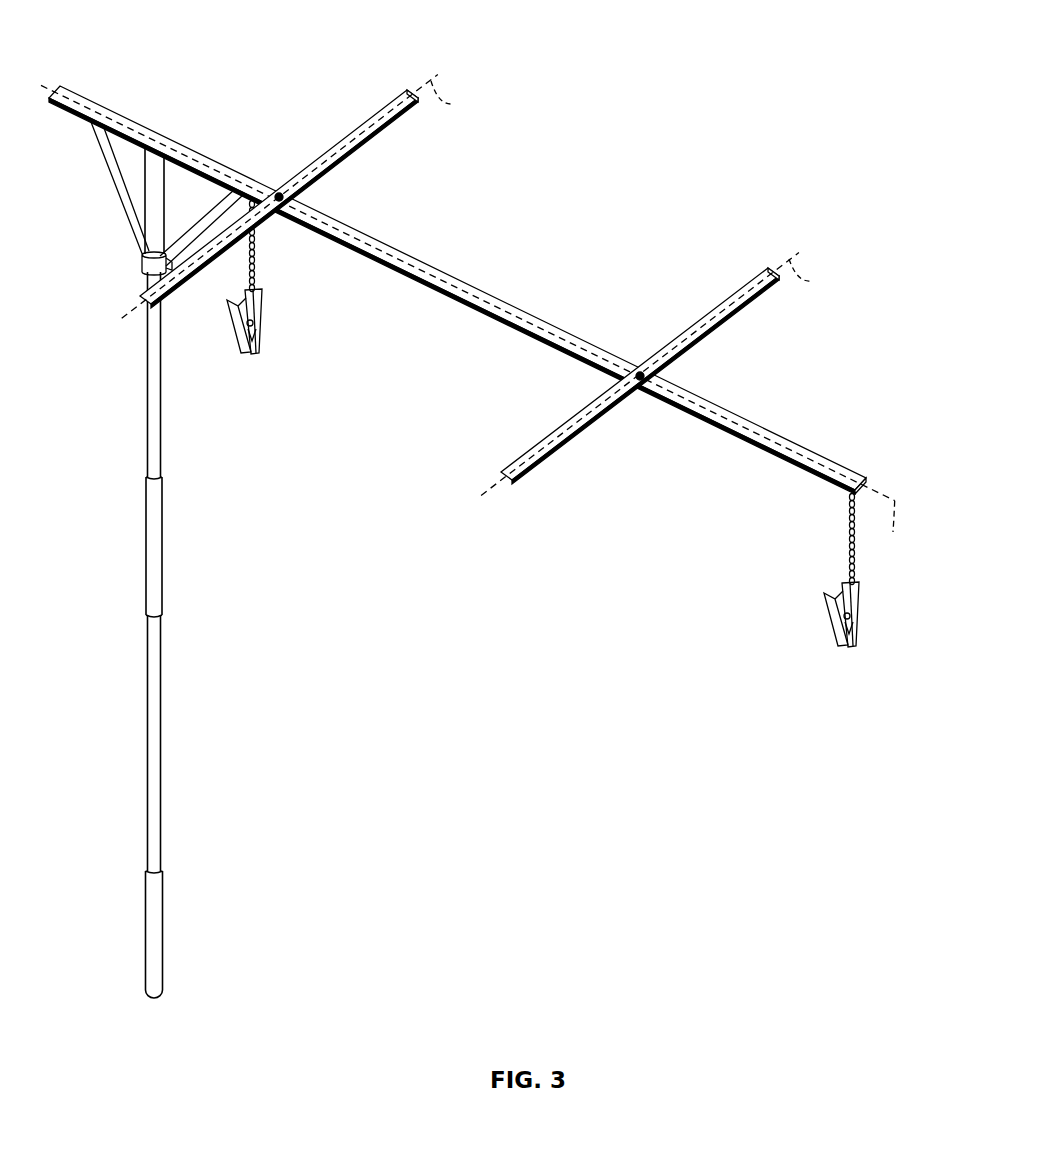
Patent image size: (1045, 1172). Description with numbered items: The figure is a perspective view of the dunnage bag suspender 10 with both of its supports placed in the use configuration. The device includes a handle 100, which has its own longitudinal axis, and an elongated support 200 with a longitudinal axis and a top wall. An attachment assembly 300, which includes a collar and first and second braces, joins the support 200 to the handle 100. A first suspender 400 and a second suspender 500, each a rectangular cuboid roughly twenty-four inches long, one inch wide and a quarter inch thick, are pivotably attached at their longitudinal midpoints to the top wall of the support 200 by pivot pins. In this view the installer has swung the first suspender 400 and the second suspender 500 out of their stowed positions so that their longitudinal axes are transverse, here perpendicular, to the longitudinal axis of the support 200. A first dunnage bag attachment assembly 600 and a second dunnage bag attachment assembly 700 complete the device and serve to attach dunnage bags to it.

The dunnage bag suspender 10 is at (783, 155).
The handle 100 is at (130, 404).
The support 200 is at (483, 324).
The attachment assembly 300 is at (98, 178).
The first suspender 400 is at (389, 126).
The second suspender 500 is at (753, 300).
The first dunnage bag attachment assembly 600 is at (262, 361).
The second dunnage bag attachment assembly 700 is at (857, 655).